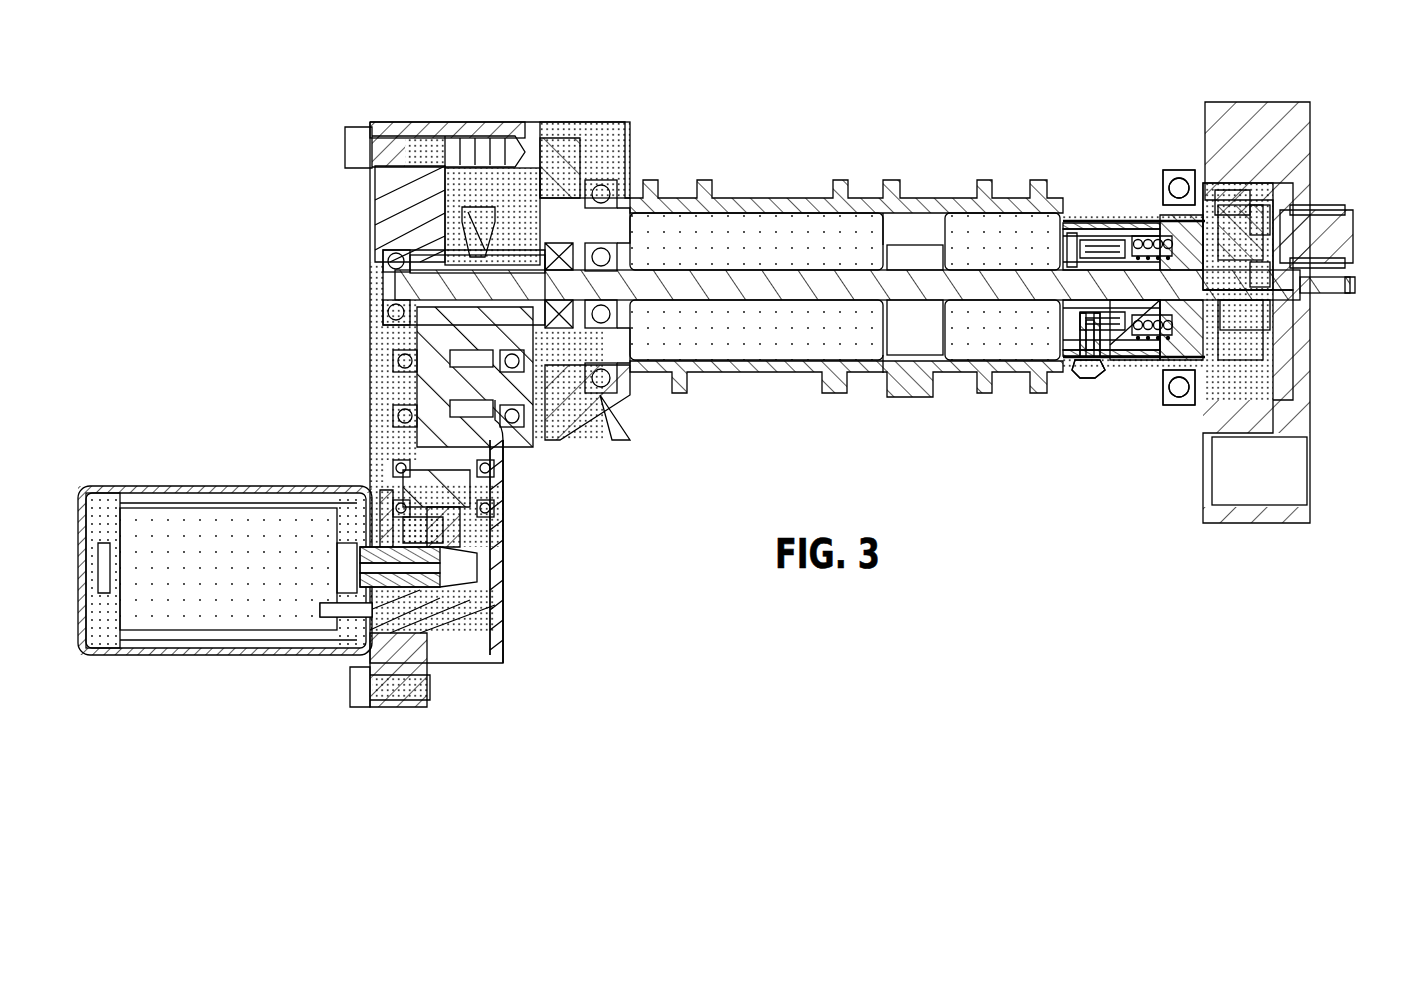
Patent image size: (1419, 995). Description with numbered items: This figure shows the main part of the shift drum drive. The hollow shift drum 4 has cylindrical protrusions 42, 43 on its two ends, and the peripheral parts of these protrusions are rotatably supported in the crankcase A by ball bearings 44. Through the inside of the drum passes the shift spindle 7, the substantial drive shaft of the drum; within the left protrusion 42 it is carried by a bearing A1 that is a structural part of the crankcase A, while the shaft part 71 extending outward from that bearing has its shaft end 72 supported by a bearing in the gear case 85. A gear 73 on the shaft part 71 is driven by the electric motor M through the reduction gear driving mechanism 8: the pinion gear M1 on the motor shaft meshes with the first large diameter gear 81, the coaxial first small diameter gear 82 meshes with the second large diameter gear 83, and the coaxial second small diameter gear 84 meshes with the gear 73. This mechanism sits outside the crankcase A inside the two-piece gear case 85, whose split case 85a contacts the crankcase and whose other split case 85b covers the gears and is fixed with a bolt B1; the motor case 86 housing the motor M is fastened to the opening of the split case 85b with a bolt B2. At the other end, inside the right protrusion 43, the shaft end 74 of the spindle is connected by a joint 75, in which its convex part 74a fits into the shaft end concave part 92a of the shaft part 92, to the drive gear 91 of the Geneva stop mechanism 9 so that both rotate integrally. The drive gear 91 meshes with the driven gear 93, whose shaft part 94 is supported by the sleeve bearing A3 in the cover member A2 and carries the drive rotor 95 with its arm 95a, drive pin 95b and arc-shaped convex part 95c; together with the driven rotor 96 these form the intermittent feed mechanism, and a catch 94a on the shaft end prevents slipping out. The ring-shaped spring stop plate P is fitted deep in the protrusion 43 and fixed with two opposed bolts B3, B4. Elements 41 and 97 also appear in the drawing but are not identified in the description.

The shift spindle 7 is at (693, 268).
The shift drum 4 is at (738, 198).
The rollers 41 is at (862, 198).
The protrusion 42 is at (600, 200).
The protrusion 43 is at (1140, 235).
The ball bearings 44 is at (592, 178).
The shaft part 71 is at (487, 140).
The shaft end 72 is at (395, 285).
The gear 73 is at (545, 400).
The shaft end 74 is at (1075, 225).
The convex part 74a is at (1105, 240).
The joint 75 is at (1170, 215).
The gear driving mechanism 8 is at (385, 355).
The first large diameter gear 81 is at (470, 560).
The first small diameter gear 82 is at (470, 515).
The second large diameter gear 83 is at (478, 470).
The second small diameter gear 84 is at (482, 410).
The gear case 85 is at (372, 395).
The split case 85a is at (505, 625).
The split case 85b is at (405, 685).
The motor case 86 is at (223, 653).
The Geneva stop mechanism 9 is at (1250, 180).
The drive gear 91 is at (1150, 360).
The shaft part 92 is at (1110, 360).
The shaft end concave part 92a is at (1095, 360).
The driven gear 93 is at (1255, 192).
The shaft part 94 is at (1340, 262).
The catch 94a is at (1350, 212).
The drive rotor 95 is at (1290, 300).
The arm 95a is at (1265, 280).
The drive pin 95b is at (1270, 320).
The arc-shaped convex part 95c is at (1265, 210).
The driven rotor 96 is at (1221, 190).
The bracket 97 is at (1310, 175).
The crankcase A is at (505, 280).
The bearing A1 is at (575, 200).
The cover member A2 is at (1300, 415).
The sleeve bearing A3 is at (1305, 250).
The bolt B1 is at (415, 148).
The bolt B2 is at (395, 690).
The bolt B3 is at (1085, 378).
The bolt B4 is at (1062, 428).
The spring stop plate P is at (1068, 235).
The electric motor M is at (183, 607).
The pinion gear M1 is at (465, 600).